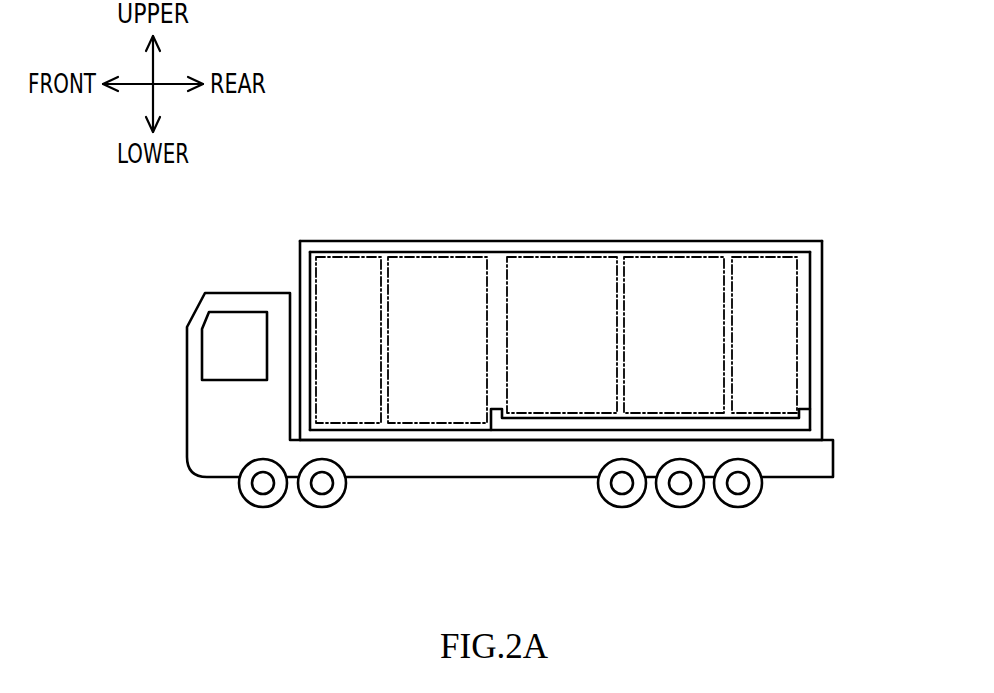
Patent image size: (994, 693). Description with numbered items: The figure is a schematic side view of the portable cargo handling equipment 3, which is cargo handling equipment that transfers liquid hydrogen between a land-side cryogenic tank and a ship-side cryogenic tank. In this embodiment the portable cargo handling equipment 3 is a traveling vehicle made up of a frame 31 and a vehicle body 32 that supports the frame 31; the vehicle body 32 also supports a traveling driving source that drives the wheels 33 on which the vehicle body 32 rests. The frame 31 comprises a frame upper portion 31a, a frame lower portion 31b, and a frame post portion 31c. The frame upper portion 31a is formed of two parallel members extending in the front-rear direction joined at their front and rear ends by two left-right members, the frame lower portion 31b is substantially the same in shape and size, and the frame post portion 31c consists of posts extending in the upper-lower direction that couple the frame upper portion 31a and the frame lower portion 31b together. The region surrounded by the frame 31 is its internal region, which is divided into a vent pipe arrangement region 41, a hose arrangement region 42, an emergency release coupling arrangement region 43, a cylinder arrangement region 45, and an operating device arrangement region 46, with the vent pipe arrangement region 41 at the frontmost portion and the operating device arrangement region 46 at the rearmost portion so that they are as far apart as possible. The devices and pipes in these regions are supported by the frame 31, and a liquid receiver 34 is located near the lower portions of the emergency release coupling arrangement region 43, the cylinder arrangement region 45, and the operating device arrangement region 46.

The portable cargo handling equipment 3 is at (741, 87).
The frame 31 is at (779, 240).
The frame upper portion 31a is at (593, 249).
The frame lower portion 31b is at (757, 434).
The frame post portion 31c is at (305, 278).
The vehicle body 32 is at (187, 413).
The wheels 33 is at (263, 507).
The liquid receiver 34 is at (782, 424).
The vent pipe arrangement region 41 is at (347, 310).
The hose arrangement region 42 is at (443, 310).
The emergency release coupling arrangement region 43 is at (574, 310).
The cylinder arrangement region 45 is at (703, 310).
The operating device arrangement region 46 is at (757, 310).